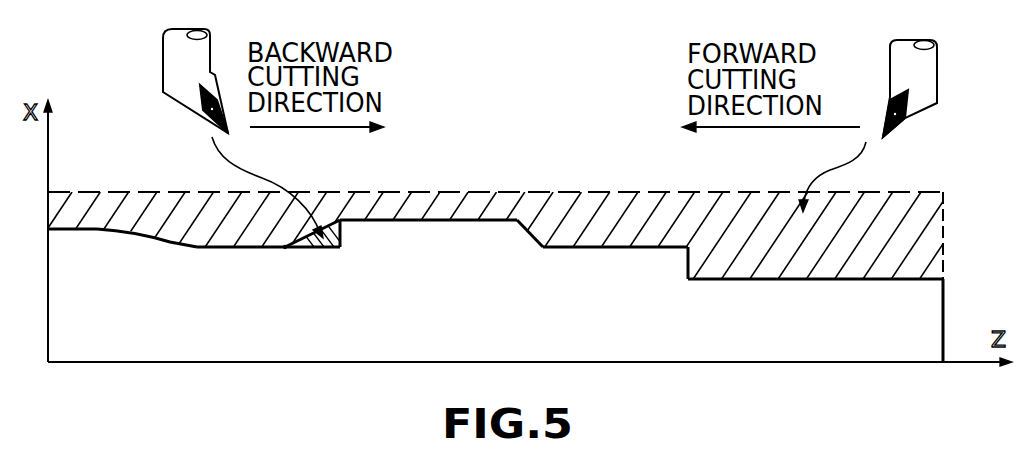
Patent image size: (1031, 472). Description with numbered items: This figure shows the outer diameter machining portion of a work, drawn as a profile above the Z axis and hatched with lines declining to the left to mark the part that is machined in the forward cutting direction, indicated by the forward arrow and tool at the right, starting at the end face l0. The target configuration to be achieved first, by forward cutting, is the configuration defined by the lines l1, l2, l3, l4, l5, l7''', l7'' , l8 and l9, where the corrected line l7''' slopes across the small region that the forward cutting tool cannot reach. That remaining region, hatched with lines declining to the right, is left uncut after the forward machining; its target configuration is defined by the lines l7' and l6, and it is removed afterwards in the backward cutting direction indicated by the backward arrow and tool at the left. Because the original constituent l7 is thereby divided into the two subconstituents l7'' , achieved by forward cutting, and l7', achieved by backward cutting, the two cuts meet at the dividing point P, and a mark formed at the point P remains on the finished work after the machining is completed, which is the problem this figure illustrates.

The profile segment l0 (end face) l0 is at (928, 320).
The line l1 is at (815, 294).
The line l2 is at (672, 263).
The line l3 is at (615, 263).
The line l4 is at (524, 238).
The line l5 is at (428, 234).
The line l6 is at (354, 234).
The line l7' is at (312, 263).
The line l7'' is at (241, 263).
The line l7''' is at (345, 257).
The line l8 is at (147, 244).
The line l9 is at (75, 244).
The dividing point P is at (284, 249).